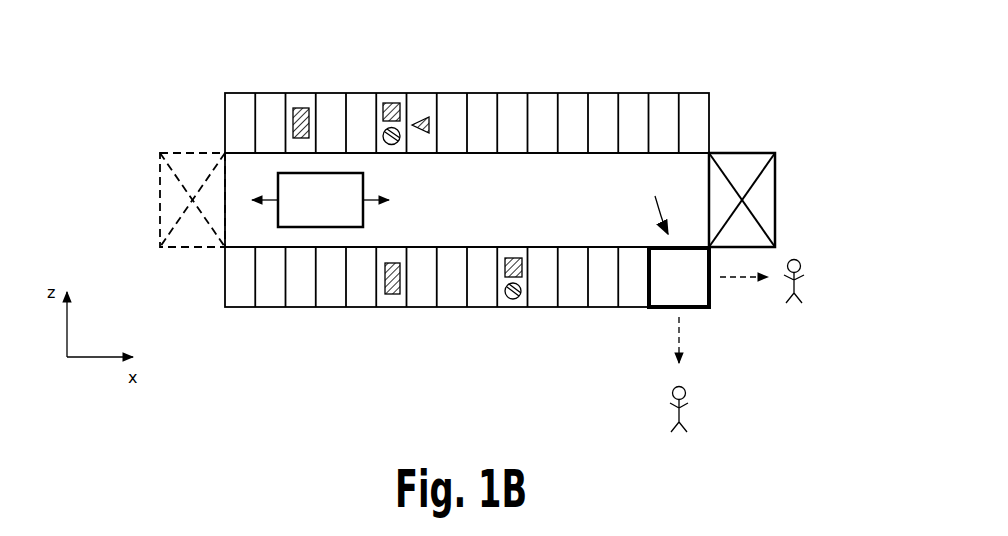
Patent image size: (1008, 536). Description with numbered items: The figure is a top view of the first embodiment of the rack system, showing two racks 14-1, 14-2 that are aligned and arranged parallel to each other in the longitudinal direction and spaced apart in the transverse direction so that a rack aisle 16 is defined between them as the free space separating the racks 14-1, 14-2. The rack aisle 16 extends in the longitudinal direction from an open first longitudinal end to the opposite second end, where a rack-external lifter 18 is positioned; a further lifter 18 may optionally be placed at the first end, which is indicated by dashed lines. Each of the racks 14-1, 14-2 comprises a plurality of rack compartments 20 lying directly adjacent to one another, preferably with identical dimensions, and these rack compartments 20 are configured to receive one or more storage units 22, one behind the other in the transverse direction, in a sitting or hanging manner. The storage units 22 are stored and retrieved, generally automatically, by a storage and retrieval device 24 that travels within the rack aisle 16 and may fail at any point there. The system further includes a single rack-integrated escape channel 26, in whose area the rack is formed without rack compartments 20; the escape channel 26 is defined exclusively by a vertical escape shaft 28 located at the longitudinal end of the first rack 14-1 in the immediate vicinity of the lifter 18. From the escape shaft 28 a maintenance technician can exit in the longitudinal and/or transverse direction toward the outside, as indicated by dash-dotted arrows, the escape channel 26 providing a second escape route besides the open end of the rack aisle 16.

The first rack 14-1 is at (216, 278).
The second rack 14-2 is at (216, 121).
The rack aisle 16 is at (467, 200).
The lifter 18 is at (777, 197).
The rack compartment 20 is at (542, 92).
The storage unit 22 is at (301, 106).
The storage and retrieval device 24 is at (320, 200).
The escape channel 26 is at (654, 203).
The escape shaft 28 is at (679, 277).